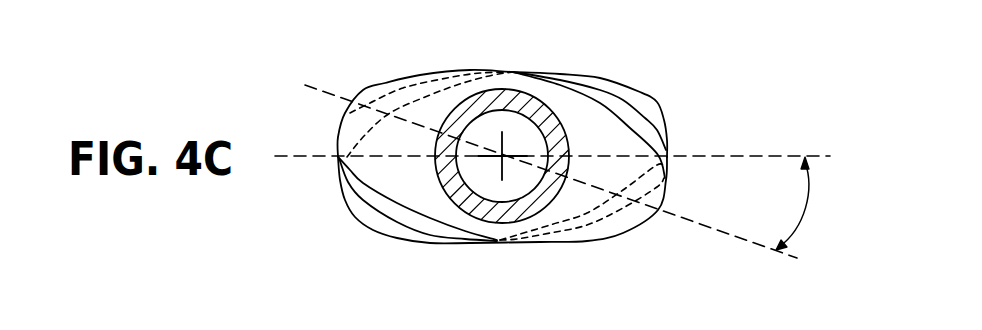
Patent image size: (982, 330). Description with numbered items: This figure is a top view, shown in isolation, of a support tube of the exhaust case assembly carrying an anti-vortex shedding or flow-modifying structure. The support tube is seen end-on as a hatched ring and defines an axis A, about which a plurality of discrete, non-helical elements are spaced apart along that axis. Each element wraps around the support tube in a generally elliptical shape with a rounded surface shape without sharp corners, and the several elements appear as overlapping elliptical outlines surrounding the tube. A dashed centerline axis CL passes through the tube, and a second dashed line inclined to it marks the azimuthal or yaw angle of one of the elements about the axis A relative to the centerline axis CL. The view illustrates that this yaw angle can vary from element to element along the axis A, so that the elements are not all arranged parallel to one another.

The axis A is at (503, 141).
The centerline axis CL is at (763, 156).